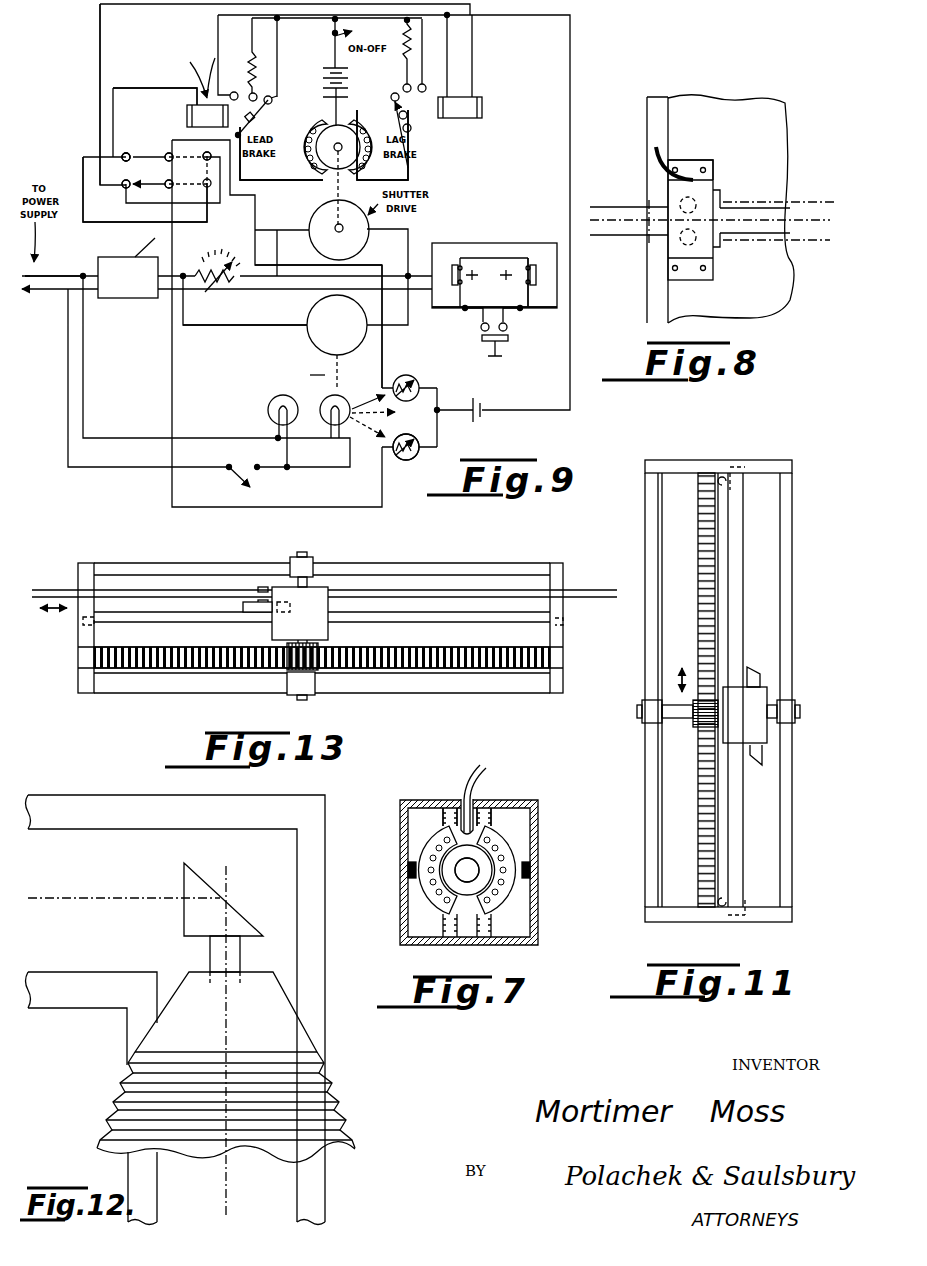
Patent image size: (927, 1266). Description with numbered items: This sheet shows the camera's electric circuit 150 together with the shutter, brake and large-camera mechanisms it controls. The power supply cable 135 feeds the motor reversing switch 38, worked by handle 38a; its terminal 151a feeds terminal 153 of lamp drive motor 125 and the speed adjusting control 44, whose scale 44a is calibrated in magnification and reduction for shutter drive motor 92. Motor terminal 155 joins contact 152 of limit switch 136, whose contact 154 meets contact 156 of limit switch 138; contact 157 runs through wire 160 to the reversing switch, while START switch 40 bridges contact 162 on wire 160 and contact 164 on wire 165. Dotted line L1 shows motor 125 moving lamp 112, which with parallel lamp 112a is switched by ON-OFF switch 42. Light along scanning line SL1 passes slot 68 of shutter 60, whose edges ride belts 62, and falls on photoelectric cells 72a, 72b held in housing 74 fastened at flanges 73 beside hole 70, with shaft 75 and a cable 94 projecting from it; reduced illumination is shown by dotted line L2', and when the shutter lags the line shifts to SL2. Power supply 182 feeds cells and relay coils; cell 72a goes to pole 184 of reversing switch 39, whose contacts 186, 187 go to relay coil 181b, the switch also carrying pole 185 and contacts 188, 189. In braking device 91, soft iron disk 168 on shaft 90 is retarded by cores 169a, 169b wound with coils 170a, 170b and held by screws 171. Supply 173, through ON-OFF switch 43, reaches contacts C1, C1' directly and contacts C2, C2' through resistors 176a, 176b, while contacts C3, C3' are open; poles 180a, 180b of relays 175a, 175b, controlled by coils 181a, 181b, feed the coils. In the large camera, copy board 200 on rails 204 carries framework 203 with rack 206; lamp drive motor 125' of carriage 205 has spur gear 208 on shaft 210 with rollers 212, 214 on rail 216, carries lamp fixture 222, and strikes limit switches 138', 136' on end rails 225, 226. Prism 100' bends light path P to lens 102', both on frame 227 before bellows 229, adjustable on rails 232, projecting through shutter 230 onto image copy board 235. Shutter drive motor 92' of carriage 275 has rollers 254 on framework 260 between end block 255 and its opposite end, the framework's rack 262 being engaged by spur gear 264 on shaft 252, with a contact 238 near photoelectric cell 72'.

In FIG. 9, the relay 175a is at (177, 75).
In FIG. 9, the relay contact C3 is at (206, 70).
In FIG. 9, the resistor 176a is at (252, 62).
In FIG. 9, the ON-OFF switch 43 is at (331, 44).
In FIG. 9, the resistor 176b is at (412, 50).
In FIG. 9, the relay contact C2 is at (232, 86).
In FIG. 9, the relay contact C1 is at (262, 83).
In FIG. 9, the battery or power supply 173 is at (330, 74).
In FIG. 9, the coil 170a is at (318, 122).
In FIG. 7, the coil 170a is at (430, 850).
In FIG. 9, the coil 170b is at (360, 120).
In FIG. 7, the coil 170b is at (502, 898).
In FIG. 9, the relay contact C2' is at (395, 73).
In FIG. 9, the relay contact C1' is at (428, 75).
In FIG. 9, the relay 175b is at (478, 95).
In FIG. 9, the relay coil 181a is at (187, 118).
In FIG. 9, the relay pole 180a is at (258, 120).
In FIG. 9, the relay coil 181b is at (482, 104).
In FIG. 9, the switch contact 186 is at (126, 153).
In FIG. 9, the photoelectric cell reversing switch 39 is at (157, 154).
In FIG. 9, the contact 189 is at (212, 152).
In FIG. 9, the relay contact C3' is at (384, 105).
In FIG. 9, the relay pole 180b is at (410, 124).
In FIG. 9, the motor braking device 91 is at (412, 157).
In FIG. 7, the motor braking device 91 is at (510, 796).
In FIG. 9, the switch pole 184 is at (126, 161).
In FIG. 9, the contact 185 is at (150, 160).
In FIG. 9, the arcuate electromagnetic core 169a is at (318, 162).
In FIG. 7, the arcuate electromagnetic core 169a is at (428, 838).
In FIG. 9, the arcuate electromagnetic core 169b is at (378, 170).
In FIG. 7, the arcuate electromagnetic core 169b is at (505, 842).
In FIG. 9, the switch contact 187 is at (205, 186).
In FIG. 9, the contact 188 is at (124, 189).
In FIG. 9, the shutter drive motor 92 is at (324, 224).
In FIG. 9, the motor shaft 90 is at (335, 229).
In FIG. 7, the motor shaft 90 is at (464, 872).
In FIG. 9, the soft iron disk 168 is at (334, 164).
In FIG. 7, the soft iron disk 168 is at (480, 864).
In FIG. 9, the limit switch 138 is at (485, 262).
In FIG. 9, the limit switch contact 156 is at (455, 265).
In FIG. 9, the limit switch 136 is at (518, 245).
In FIG. 9, the limit switch contact 154 is at (536, 265).
In FIG. 9, the power supply cable 135 is at (45, 268).
In FIG. 9, the operating handle 38a is at (142, 243).
In FIG. 9, the reversing switch terminal 151a is at (188, 272).
In FIG. 9, the dial or scale 44a is at (226, 246).
In FIG. 9, the wire 160 is at (370, 272).
In FIG. 9, the limit switch contact 152 is at (556, 300).
In FIG. 9, the speed adjusting control 44 is at (228, 284).
In FIG. 9, the motor terminal 153 is at (292, 326).
In FIG. 9, the motor reversing switch 38 is at (127, 299).
In FIG. 9, the limit switch contact 157 is at (460, 310).
In FIG. 9, the wire 165 is at (560, 302).
In FIG. 9, the lamp drive motor 125 is at (316, 342).
In FIG. 9, the motor terminal 155 is at (386, 330).
In FIG. 9, the START switch contact 162 is at (480, 331).
In FIG. 9, the START switch contact 164 is at (507, 331).
In FIG. 9, the START switch 40 is at (500, 345).
In FIG. 9, the dotted line L1 is at (305, 375).
In FIG. 9, the lamp 112a is at (270, 402).
In FIG. 9, the lamp 112 is at (330, 400).
In FIG. 9, the scanning line SL1 is at (395, 420).
In FIG. 8, the scanning line SL1 is at (800, 220).
In FIG. 9, the battery or power supply 182 is at (482, 420).
In FIG. 9, the dotted line L2' is at (384, 447).
In FIG. 9, the ON-OFF switch 42 is at (252, 462).
In FIG. 9, the photoelectric cell 72a is at (406, 462).
In FIG. 8, the photoelectric cell 72a is at (695, 242).
In FIG. 9, the electric circuit 150 is at (130, 488).
In FIG. 8, the cable 94 is at (672, 147).
In FIG. 8, the flanges 73 is at (695, 165).
In FIG. 8, the endless belt 62 is at (660, 130).
In FIG. 8, the photoelectric cell 72b is at (680, 200).
In FIG. 8, the shaft 75 is at (606, 218).
In FIG. 8, the hole 70 is at (720, 196).
In FIG. 8, the shifted scanning line SL2 is at (800, 202).
In FIG. 8, the housing 74 is at (668, 244).
In FIG. 8, the horizontal slot 68 is at (768, 233).
In FIG. 8, the shutter 60 is at (780, 302).
In FIG. 11, the end rail 225 is at (688, 446).
In FIG. 11, the limit switch 138' is at (742, 461).
In FIG. 11, the framework 203 is at (642, 500).
In FIG. 11, the carriage 205 is at (764, 670).
In FIG. 11, the lamp drive motor 125' is at (780, 699).
In FIG. 11, the roller 212 is at (650, 704).
In FIG. 11, the roller 214 is at (785, 715).
In FIG. 11, the shaft 210 is at (676, 718).
In FIG. 11, the spur gear 208 is at (690, 725).
In FIG. 11, the lamp fixture 222 is at (758, 755).
In FIG. 11, the subject copy board 200 is at (735, 802).
In FIG. 11, the horizontal rail 216 is at (645, 818).
In FIG. 11, the rack gear or track 206 is at (698, 863).
In FIG. 11, the end rail 226 is at (668, 915).
In FIG. 11, the limit switch 136' is at (770, 921).
In FIG. 13, the roller 254 is at (310, 554).
In FIG. 13, the photoelectric cell 72' is at (245, 589).
In FIG. 13, the shaft 252 is at (316, 583).
In FIG. 13, the contact 238 is at (243, 606).
In FIG. 13, the shutter drive motor 92' is at (324, 613).
In FIG. 13, the shutter 230 is at (590, 590).
In FIG. 13, the framework 260 is at (78, 685).
In FIG. 13, the image copy board 235 is at (148, 672).
In FIG. 13, the rack gear or track 262 is at (195, 670).
In FIG. 13, the spur gear 264 is at (285, 670).
In FIG. 13, the carriage 275 is at (338, 640).
In FIG. 13, the end block 255 is at (442, 688).
In FIG. 7, the screws 171 is at (432, 924).
In FIG. 12, the light path P is at (131, 898).
In FIG. 12, the prism 100' is at (233, 899).
In FIG. 12, the lens 102' is at (250, 960).
In FIG. 12, the frame 227 is at (275, 1027).
In FIG. 12, the horizontal rails 204 is at (84, 993).
In FIG. 12, the bellows 229 is at (112, 1107).
In FIG. 12, the rails 232 is at (138, 1173).